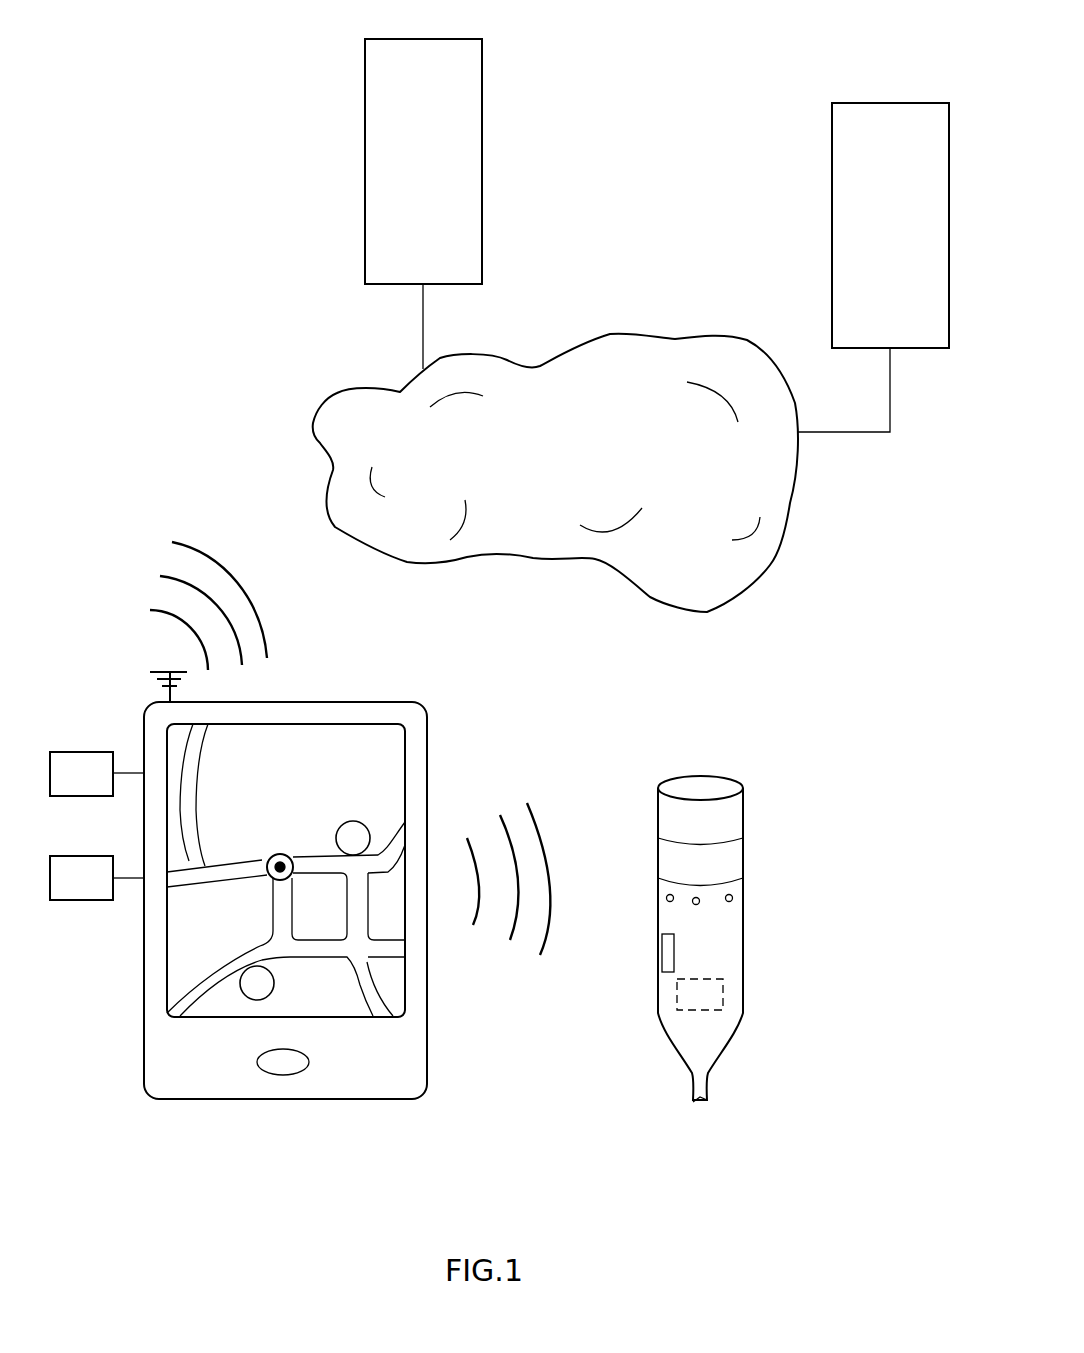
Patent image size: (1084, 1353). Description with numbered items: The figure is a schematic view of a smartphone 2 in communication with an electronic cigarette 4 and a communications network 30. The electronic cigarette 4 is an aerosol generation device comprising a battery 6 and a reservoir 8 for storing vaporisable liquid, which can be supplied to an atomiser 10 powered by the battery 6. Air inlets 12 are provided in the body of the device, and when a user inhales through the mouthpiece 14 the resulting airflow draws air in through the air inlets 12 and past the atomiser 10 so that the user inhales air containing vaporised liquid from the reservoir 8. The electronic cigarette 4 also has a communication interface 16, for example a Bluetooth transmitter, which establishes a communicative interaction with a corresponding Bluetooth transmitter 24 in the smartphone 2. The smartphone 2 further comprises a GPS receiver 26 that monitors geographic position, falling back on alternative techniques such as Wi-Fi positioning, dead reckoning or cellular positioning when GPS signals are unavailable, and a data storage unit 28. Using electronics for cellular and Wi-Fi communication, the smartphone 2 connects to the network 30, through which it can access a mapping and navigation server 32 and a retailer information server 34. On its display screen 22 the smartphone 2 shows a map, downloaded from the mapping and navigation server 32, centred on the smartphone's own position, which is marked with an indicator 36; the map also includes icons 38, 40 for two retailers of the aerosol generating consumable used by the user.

The smartphone 2 is at (142, 1128).
The electronic cigarette 4 is at (796, 917).
The battery 6 is at (727, 817).
The reservoir 8 is at (723, 857).
The atomiser 10 is at (710, 990).
The air inlets 12 is at (670, 899).
The mouthpiece 14 is at (696, 1100).
The communication interface 16 is at (670, 958).
The display screen 22 is at (309, 715).
The Bluetooth transmitter 24 is at (162, 672).
The GPS receiver 26 is at (103, 788).
The data storage unit 28 is at (104, 893).
The network 30 is at (573, 469).
The mapping and navigation server 32 is at (449, 154).
The retailer information server 34 is at (910, 194).
The indicator 36 is at (275, 852).
The icon 38 is at (350, 820).
The icon 40 is at (240, 990).